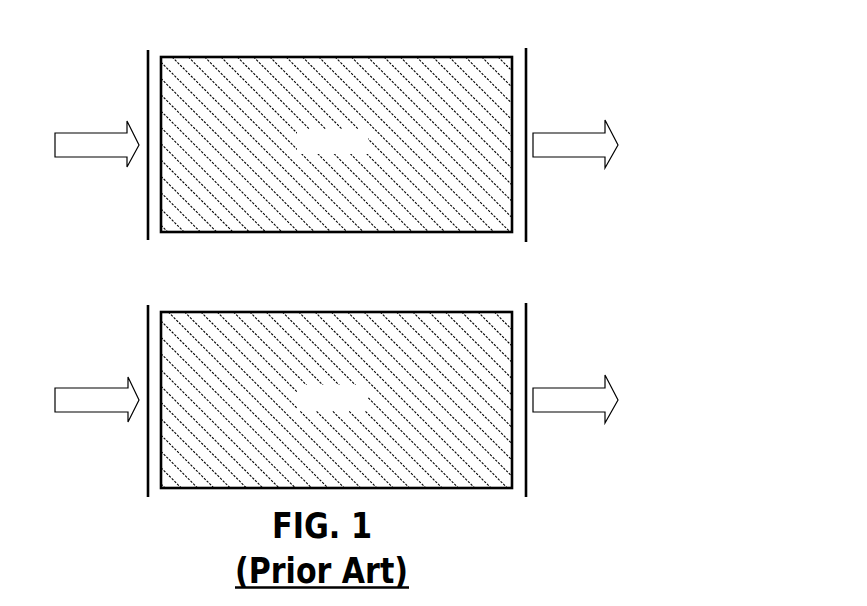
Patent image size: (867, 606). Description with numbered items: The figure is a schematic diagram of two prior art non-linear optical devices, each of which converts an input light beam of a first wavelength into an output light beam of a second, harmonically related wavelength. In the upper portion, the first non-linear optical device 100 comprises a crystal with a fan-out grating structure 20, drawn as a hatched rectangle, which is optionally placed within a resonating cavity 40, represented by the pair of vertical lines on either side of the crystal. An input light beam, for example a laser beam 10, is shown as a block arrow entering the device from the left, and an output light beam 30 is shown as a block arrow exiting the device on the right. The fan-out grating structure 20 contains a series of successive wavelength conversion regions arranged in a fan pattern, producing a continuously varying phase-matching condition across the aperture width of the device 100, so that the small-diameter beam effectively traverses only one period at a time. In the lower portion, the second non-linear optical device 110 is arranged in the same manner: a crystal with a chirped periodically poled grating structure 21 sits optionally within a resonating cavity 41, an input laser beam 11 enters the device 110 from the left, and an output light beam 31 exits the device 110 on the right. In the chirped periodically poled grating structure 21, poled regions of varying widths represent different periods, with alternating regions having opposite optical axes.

The first non-linear optical device 100 is at (90, 202).
The second non-linear optical device 110 is at (113, 480).
The laser beam 10 is at (93, 133).
The input laser beam 11 is at (93, 388).
The fan-out grating structure 20 is at (319, 152).
The chirped periodically poled grating structure 21 is at (319, 407).
The output light beam 30 is at (575, 132).
The output light beam 31 is at (575, 386).
The resonating cavity 40 is at (337, 132).
The resonating cavity 41 is at (337, 386).